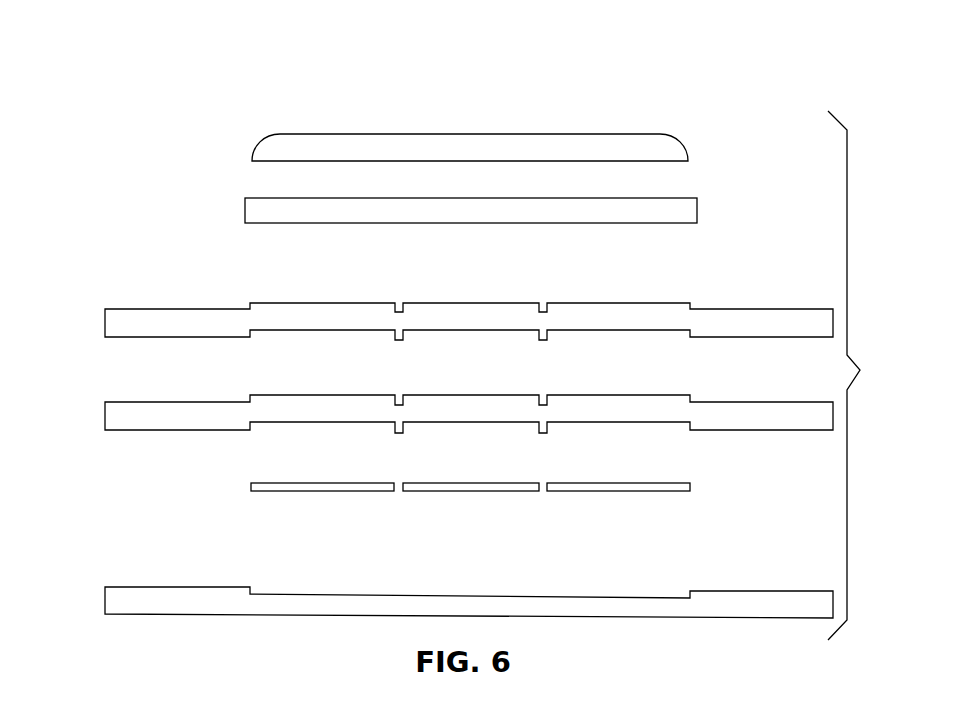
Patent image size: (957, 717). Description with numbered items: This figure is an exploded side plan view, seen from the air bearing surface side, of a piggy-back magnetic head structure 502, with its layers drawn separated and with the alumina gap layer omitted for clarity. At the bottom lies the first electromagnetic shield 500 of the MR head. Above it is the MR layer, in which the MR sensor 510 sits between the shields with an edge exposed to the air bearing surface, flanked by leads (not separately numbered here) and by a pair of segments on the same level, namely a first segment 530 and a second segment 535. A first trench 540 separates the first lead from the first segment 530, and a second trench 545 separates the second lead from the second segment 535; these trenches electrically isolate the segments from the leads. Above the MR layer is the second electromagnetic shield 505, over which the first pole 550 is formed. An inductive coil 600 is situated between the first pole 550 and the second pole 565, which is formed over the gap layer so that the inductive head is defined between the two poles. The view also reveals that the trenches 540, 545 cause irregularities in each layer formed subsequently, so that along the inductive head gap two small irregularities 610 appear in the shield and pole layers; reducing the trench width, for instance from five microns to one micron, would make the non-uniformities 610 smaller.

The piggy-back magnetic head structure 502 is at (155, 102).
The second pole 565 is at (255, 155).
The inductive coil 600 is at (245, 211).
The first pole 550 is at (107, 320).
The irregularities 610 is at (538, 294).
The second electromagnetic shield 505 is at (107, 409).
The first segment 530 is at (294, 492).
The first trench 540 is at (398, 492).
The MR sensor 510 is at (470, 492).
The second trench 545 is at (543, 492).
The second segment 535 is at (640, 492).
The first electromagnetic shield 500 is at (107, 599).